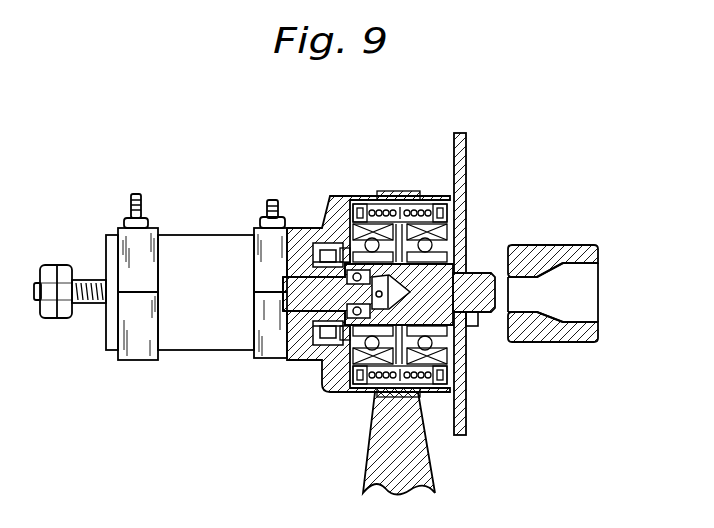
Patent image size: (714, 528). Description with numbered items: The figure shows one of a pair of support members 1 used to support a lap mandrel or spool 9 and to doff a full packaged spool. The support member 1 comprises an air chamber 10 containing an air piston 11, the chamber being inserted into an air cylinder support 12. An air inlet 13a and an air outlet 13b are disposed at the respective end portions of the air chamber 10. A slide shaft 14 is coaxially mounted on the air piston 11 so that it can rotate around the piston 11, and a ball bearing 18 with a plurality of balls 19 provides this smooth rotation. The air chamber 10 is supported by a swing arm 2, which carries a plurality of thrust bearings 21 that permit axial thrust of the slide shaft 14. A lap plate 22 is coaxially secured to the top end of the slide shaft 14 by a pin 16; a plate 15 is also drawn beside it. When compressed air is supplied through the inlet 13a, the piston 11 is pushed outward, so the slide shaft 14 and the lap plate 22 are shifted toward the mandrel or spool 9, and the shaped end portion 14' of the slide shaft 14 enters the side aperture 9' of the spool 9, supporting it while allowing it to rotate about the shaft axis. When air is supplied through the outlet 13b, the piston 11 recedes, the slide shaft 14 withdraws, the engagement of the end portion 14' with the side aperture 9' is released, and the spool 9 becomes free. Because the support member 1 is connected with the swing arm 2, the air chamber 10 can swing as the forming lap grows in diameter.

The support member 1 is at (297, 167).
The swing arm 2 is at (427, 462).
The lap mandrel or spool 9 is at (558, 268).
The side aperture 9' is at (524, 276).
The air chamber 10 is at (196, 242).
The air piston 11 is at (283, 306).
The air cylinder support 12 is at (327, 356).
The air inlet 13a is at (141, 206).
The air outlet 13b is at (268, 207).
The slide shaft 14 is at (368, 294).
The end portion of slide shaft 14' is at (477, 313).
The lower plate 15 is at (466, 408).
The pin 16 is at (470, 326).
The ball bearing 18 is at (356, 274).
The balls 19 is at (330, 258).
The thrust bearings 21 is at (371, 240).
The lap plate 22 is at (466, 162).